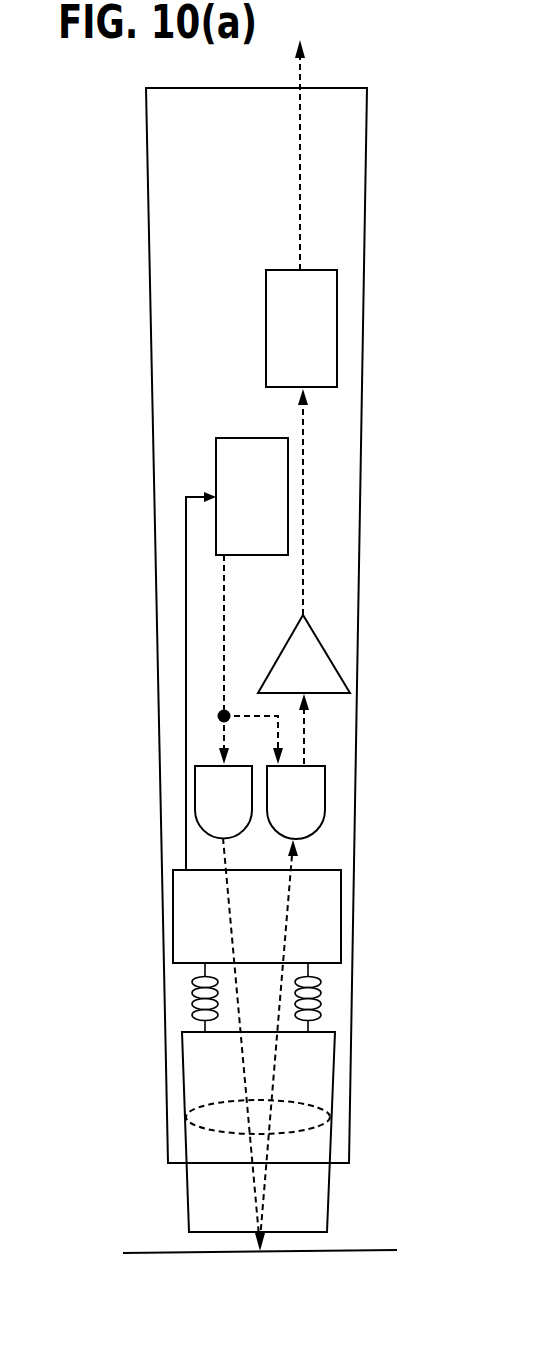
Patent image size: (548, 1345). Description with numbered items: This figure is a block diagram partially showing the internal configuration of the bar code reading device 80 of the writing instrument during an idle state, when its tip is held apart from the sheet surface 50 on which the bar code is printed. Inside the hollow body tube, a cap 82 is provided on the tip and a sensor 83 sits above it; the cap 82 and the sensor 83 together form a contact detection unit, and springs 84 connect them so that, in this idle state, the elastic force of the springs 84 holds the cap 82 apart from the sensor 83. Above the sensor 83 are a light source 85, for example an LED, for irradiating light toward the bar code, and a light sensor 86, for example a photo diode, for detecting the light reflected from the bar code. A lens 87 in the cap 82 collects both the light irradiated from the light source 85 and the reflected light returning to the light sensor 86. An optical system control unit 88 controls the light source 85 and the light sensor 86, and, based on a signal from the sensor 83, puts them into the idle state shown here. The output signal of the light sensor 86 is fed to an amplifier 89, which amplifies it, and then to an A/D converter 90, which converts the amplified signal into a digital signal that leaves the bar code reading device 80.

The bar code reading device 80 is at (365, 58).
The A/D converter 90 is at (266, 330).
The optical system control unit 88 is at (230, 438).
The amplifier 89 is at (327, 648).
The light source 85 is at (195, 770).
The light sensor 86 is at (327, 773).
The sensor 83 is at (341, 900).
The springs 84 is at (320, 987).
The cap 82 is at (335, 1073).
The lens 87 is at (333, 1108).
The sheet surface 50 is at (147, 1253).